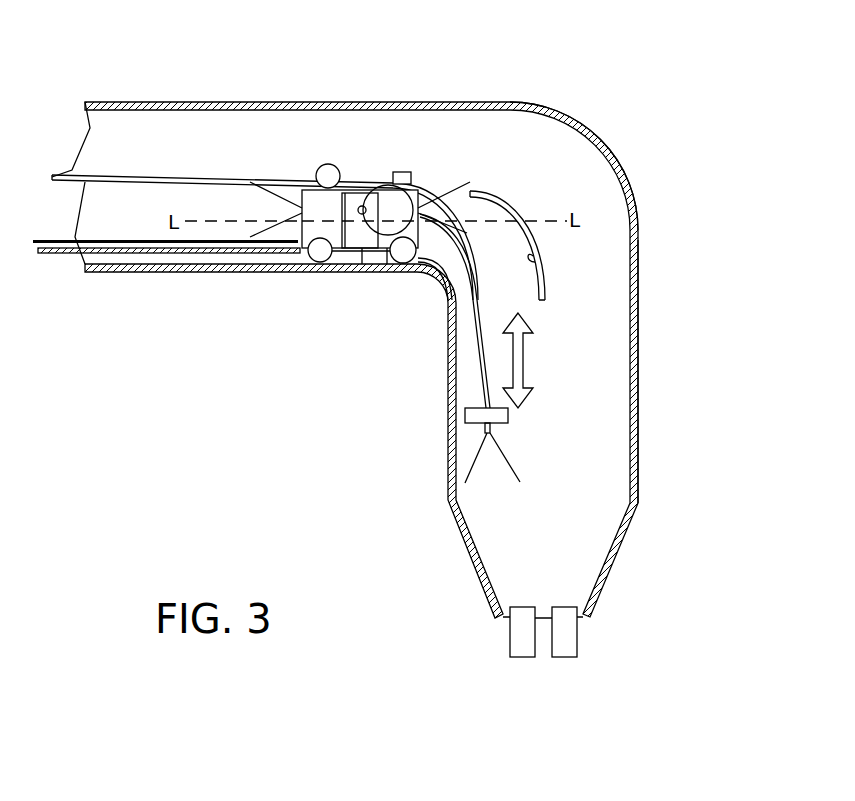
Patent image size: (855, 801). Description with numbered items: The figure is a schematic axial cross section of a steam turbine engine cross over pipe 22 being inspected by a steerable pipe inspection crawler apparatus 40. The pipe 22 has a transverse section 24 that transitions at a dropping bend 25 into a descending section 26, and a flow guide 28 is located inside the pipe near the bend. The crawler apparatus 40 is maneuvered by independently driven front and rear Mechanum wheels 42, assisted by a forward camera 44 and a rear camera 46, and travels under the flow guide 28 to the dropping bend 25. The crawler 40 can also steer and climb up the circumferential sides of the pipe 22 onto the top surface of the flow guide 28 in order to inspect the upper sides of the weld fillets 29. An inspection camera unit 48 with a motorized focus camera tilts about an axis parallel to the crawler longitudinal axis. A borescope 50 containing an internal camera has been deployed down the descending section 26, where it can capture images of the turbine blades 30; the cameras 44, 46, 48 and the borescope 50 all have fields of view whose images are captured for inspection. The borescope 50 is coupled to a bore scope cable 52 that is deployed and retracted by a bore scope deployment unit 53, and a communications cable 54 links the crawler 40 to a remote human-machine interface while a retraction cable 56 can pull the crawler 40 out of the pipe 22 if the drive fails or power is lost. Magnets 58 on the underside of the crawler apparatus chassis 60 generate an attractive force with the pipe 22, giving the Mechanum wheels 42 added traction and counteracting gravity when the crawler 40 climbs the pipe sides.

The cross over pipe 22 is at (365, 68).
The transverse section 24 is at (193, 102).
The dropping bend 25 is at (560, 108).
The descending section 26 is at (638, 271).
The flow guide 28 is at (517, 207).
The weld fillets 29 is at (533, 256).
The turbine blades 30 is at (518, 640).
The pipe inspection crawler apparatus 40 is at (363, 160).
The Mechanum wheels 42 is at (316, 258).
The forward camera 44 is at (483, 290).
The rear camera 46 is at (300, 210).
The inspection camera unit 48 is at (367, 252).
The borescope 50 is at (497, 426).
The bore scope cable 52 is at (280, 173).
The bore scope deployment unit 53 is at (408, 172).
The communications cable 54 is at (136, 241).
The retraction cable 56 is at (101, 254).
The magnets 58 is at (362, 252).
The crawler apparatus chassis 60 is at (387, 252).